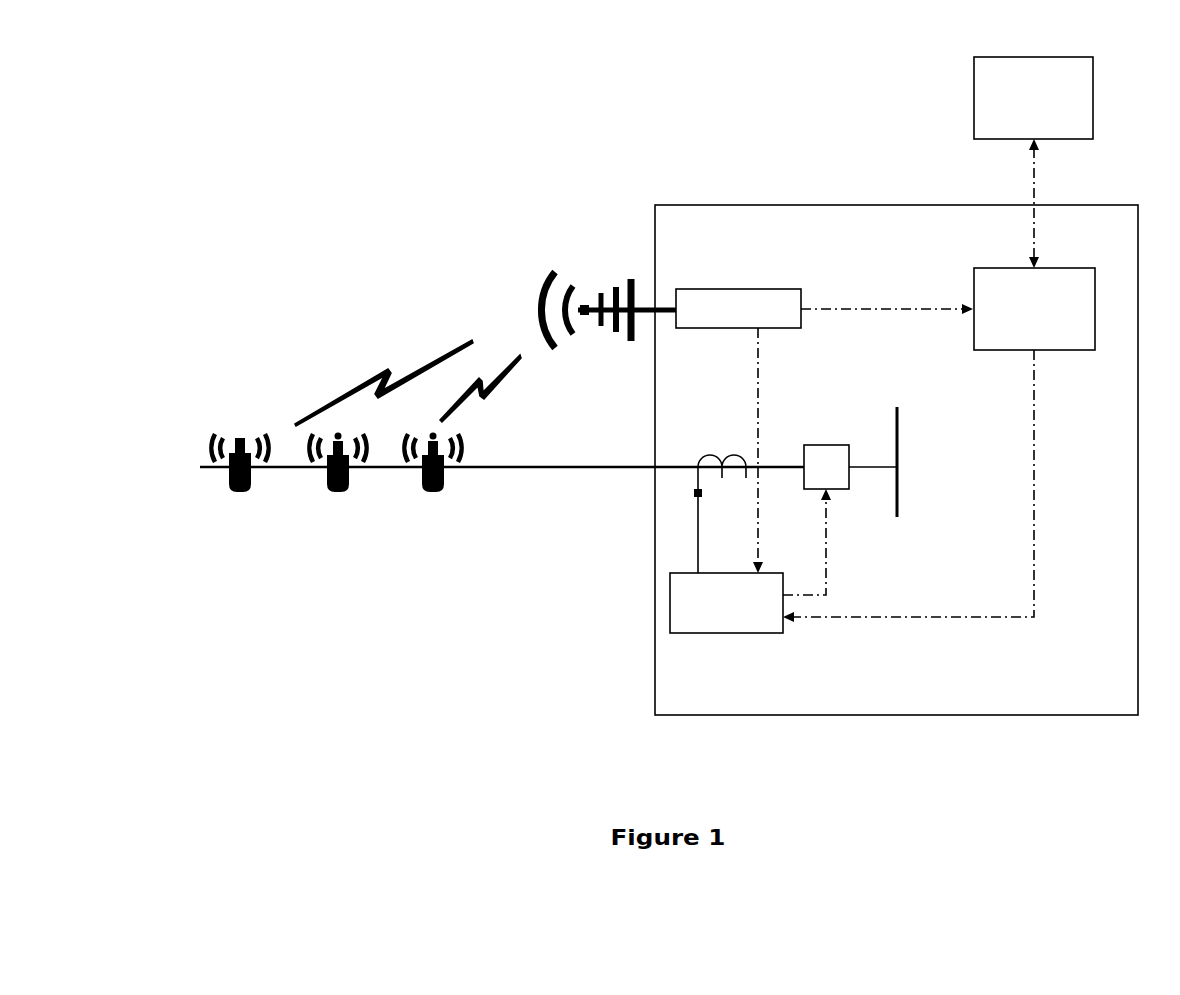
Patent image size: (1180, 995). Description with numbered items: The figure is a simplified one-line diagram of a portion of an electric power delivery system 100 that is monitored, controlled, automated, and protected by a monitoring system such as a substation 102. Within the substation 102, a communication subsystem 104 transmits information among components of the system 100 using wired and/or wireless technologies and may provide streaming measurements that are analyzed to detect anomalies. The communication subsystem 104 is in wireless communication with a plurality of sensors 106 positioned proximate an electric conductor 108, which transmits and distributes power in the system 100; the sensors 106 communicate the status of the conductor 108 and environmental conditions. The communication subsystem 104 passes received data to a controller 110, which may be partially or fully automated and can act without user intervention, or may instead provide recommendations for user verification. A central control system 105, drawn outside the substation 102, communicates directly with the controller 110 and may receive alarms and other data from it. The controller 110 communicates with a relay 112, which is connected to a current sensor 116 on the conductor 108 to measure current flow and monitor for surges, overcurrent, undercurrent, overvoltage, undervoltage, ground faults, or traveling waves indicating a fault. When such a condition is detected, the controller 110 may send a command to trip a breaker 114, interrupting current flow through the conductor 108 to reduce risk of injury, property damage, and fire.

The electric power delivery system 100 is at (366, 96).
The substation 102 is at (692, 247).
The communication subsystem 104 is at (722, 323).
The central control system 105 is at (1017, 111).
The sensors 106 is at (240, 438).
The electric conductor 108 is at (551, 470).
The controller 110 is at (1017, 319).
The relay 112 is at (707, 611).
The breaker 114 is at (826, 445).
The current sensor 116 is at (724, 460).